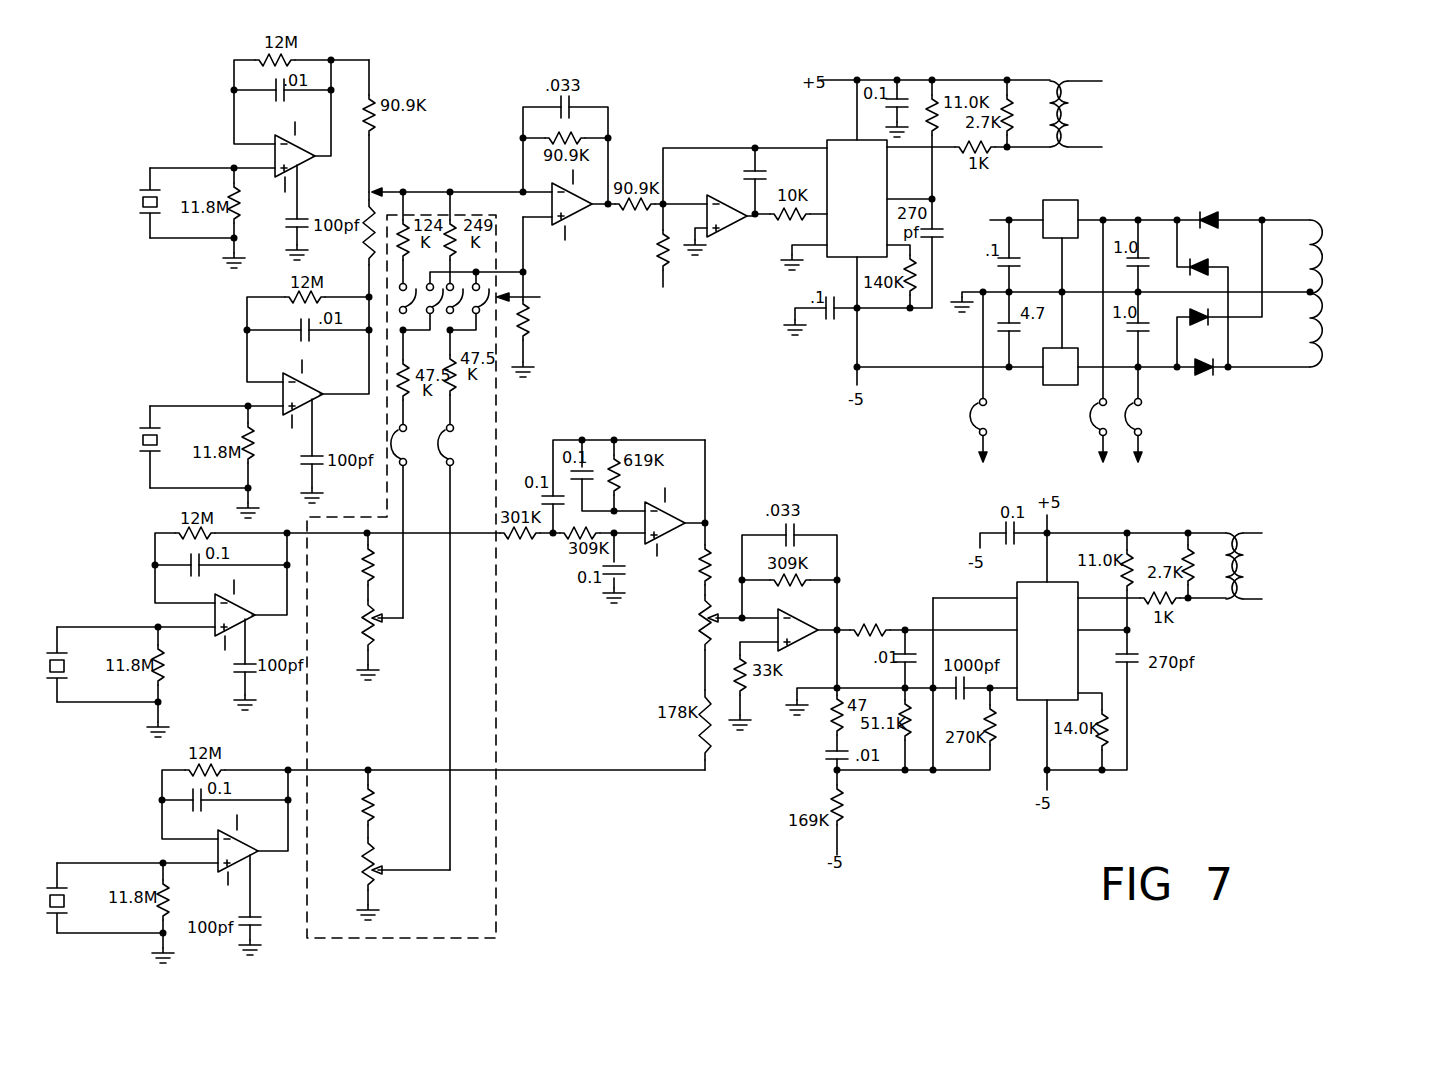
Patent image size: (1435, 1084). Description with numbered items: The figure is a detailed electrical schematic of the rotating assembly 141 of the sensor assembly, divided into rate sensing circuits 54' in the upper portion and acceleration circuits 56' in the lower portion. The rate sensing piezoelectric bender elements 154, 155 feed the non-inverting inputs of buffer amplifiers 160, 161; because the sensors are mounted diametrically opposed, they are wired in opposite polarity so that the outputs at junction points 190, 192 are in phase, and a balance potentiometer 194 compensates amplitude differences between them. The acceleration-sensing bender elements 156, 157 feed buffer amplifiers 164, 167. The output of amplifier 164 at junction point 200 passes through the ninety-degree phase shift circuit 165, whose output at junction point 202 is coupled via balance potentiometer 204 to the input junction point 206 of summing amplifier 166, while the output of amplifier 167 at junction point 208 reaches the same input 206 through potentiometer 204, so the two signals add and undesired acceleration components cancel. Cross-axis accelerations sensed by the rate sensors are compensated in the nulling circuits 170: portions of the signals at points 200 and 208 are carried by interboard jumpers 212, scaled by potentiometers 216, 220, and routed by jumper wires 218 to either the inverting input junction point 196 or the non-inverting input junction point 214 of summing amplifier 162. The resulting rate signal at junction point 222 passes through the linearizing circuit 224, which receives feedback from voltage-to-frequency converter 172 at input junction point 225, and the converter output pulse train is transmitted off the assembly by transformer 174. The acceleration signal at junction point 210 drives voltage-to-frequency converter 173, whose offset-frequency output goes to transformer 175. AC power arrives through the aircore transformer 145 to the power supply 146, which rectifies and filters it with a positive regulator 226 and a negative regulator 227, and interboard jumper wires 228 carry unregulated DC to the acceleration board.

The rate sensing piezoelectric bender element 154 is at (158, 192).
The rate sensing piezoelectric bender element 155 is at (160, 437).
The acceleration-sensing piezoelectric bender element 156 is at (65, 655).
The acceleration-sensing piezoelectric bender element 157 is at (65, 890).
The buffer amplifier 160 is at (314, 162).
The buffer amplifier 161 is at (306, 382).
The buffer amplifier 164 is at (250, 619).
The buffer amplifier 167 is at (253, 861).
The summing amplifier 162 is at (586, 222).
The linearizing circuit 224 is at (736, 231).
The 90° phase shift circuit 165 is at (690, 512).
The summing amplifier 166 is at (797, 649).
The voltage-to-frequency converter 172 is at (827, 140).
The voltage-to-frequency converter 173 is at (1037, 702).
The transformer 174 is at (1058, 82).
The transformer 175 is at (1240, 535).
The junction point 190 is at (333, 58).
The junction point 192 is at (367, 295).
The balance potentiometer 194 is at (374, 186).
The input junction point 196 is at (453, 188).
The junction point 200 is at (366, 531).
The junction point 208 is at (369, 768).
The potentiometer 216 is at (366, 612).
The potentiometer 220 is at (372, 866).
The interboard jumper 212 is at (455, 461).
The input junction point 214 is at (527, 272).
The jumper wires 218 is at (542, 332).
The nulling circuits 170 is at (497, 412).
The junction point 222 is at (642, 253).
The input junction point 225 is at (664, 202).
The positive regulator 226 is at (1075, 200).
The negative regulator 227 is at (1068, 386).
The interboard jumper wires 228 is at (1075, 431).
The aircore transformer 145 is at (1324, 376).
The power supply 146 is at (995, 216).
The rotating assembly 141 is at (722, 388).
The junction point 202 is at (708, 519).
The balance potentiometer 204 is at (701, 617).
The input junction point 206 is at (740, 621).
The junction point 210 is at (841, 627).
The rate sensing circuits 54' is at (652, 119).
The acceleration circuits 56' is at (663, 799).